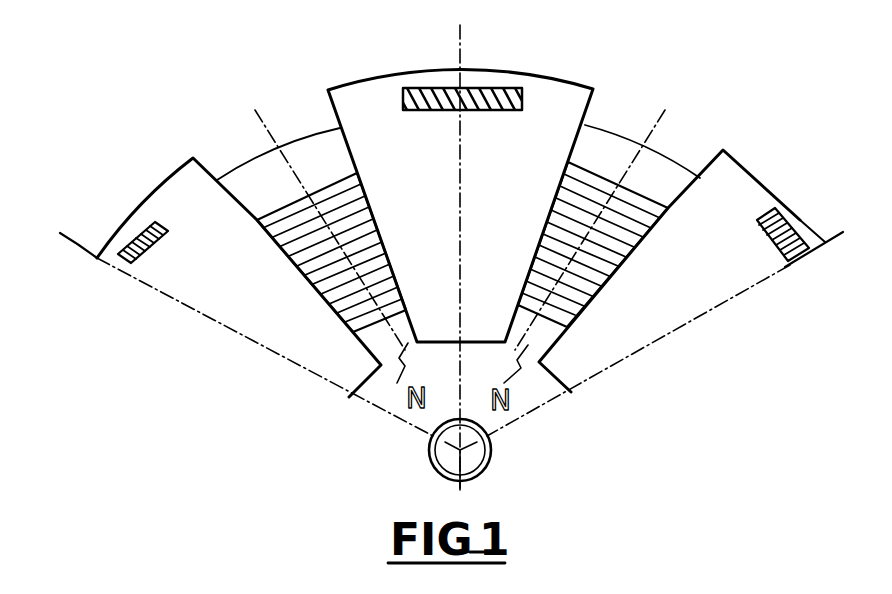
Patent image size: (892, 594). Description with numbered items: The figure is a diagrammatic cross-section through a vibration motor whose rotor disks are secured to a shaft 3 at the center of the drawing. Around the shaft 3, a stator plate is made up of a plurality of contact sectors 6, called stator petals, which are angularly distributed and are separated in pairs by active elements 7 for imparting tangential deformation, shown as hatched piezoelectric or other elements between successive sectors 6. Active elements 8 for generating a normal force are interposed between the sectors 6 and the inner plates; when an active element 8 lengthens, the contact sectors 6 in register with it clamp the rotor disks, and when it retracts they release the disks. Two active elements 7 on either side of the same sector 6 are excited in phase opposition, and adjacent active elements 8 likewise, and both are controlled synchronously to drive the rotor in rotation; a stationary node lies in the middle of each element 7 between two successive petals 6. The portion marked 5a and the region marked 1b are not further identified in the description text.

The yoke ring segment 1b is at (657, 183).
The shaft 3 is at (492, 455).
The pole piece 5a is at (555, 118).
The contact sector 6 is at (373, 98).
The active element for imparting tangential deformation 7 is at (321, 184).
The active element for generating a normal force 8 is at (497, 88).